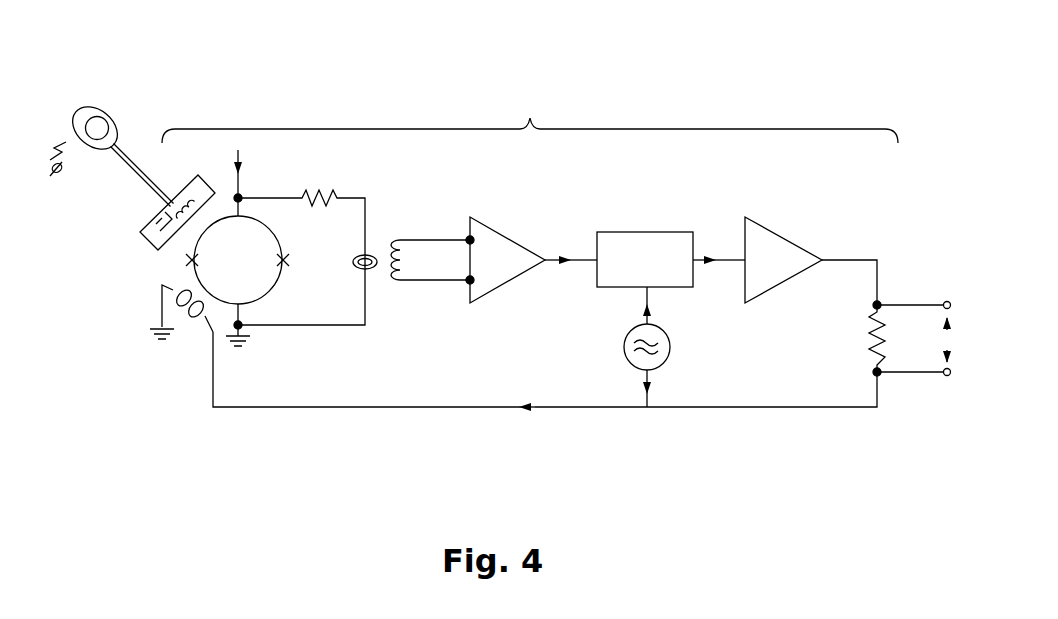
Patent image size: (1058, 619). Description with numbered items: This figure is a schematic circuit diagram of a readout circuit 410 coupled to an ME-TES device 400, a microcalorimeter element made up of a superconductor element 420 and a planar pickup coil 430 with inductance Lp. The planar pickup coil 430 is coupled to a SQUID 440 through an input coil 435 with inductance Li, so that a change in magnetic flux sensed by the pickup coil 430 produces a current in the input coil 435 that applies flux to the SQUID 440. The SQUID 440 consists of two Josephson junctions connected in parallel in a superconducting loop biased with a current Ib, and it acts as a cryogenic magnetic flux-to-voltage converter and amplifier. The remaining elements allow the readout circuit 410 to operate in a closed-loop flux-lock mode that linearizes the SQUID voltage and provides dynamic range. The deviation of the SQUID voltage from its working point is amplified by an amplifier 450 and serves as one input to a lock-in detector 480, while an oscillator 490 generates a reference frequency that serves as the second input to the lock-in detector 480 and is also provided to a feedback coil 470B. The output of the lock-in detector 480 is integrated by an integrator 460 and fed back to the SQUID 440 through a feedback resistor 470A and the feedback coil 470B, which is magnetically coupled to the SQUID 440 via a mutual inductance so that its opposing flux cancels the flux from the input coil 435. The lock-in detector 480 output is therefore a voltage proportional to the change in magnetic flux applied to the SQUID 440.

The ME-TES device 400 is at (116, 110).
The readout circuit 410 is at (530, 113).
The superconductor element 420 is at (97, 123).
The planar pickup coil 430 is at (95, 156).
The input coil 435 is at (145, 257).
The SQUID 440 is at (271, 214).
The amplifier 450 is at (498, 325).
The integrator 460 is at (782, 321).
The feedback resistor 470A is at (863, 374).
The feedback coil 470B is at (185, 330).
The lock-in detector 480 is at (688, 212).
The oscillator 490 is at (631, 383).